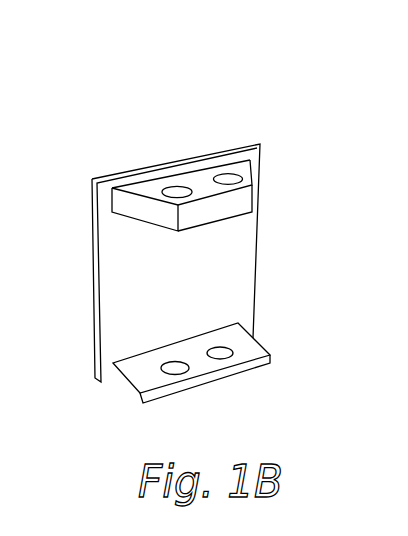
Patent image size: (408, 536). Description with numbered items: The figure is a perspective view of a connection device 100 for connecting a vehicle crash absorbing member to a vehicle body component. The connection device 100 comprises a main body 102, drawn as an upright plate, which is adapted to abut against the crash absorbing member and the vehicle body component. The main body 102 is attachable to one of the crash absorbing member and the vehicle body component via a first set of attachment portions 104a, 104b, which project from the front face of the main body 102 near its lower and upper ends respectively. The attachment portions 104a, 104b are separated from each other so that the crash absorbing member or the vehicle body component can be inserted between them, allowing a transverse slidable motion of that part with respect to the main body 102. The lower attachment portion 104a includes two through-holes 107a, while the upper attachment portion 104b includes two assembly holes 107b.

The connection device 100 is at (172, 100).
The main body 102 is at (207, 286).
The attachment portion 104a is at (240, 340).
The attachment portion 104b is at (200, 178).
The through-holes 107a is at (175, 369).
The assembly holes 107b is at (177, 191).